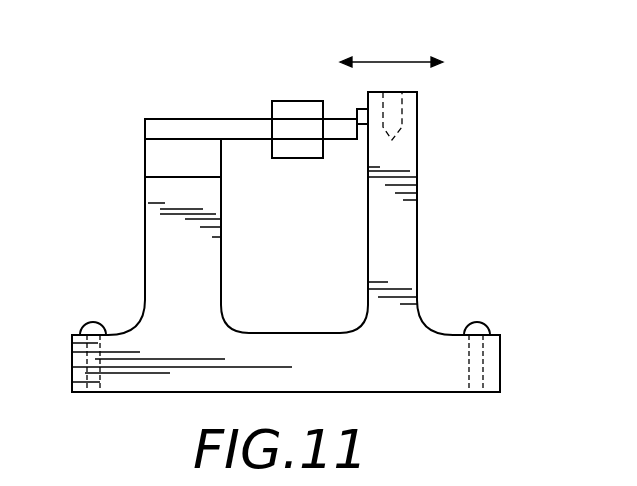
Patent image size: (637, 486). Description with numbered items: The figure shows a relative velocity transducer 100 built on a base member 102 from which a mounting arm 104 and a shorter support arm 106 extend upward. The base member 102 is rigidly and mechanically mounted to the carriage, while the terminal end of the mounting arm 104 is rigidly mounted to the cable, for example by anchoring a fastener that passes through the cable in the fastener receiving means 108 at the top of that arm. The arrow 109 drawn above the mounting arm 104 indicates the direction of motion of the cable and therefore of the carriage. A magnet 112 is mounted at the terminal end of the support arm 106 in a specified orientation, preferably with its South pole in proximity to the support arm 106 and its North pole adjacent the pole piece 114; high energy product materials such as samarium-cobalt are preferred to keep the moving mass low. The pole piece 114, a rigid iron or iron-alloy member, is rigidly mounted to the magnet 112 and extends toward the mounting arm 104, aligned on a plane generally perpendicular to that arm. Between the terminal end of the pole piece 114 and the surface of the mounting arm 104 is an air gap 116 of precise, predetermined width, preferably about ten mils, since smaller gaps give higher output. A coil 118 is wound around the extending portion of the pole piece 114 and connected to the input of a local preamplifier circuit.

The relative velocity transducer 100 is at (442, 273).
The base member 102 is at (388, 378).
The mounting arm 104 is at (417, 213).
The support arm 106 is at (221, 239).
The fastener receiving means 108 is at (402, 117).
The arrow 109 is at (398, 62).
The magnet 112 is at (155, 153).
The pole piece 114 is at (185, 127).
The air gap 116 is at (362, 108).
The coil 118 is at (307, 146).